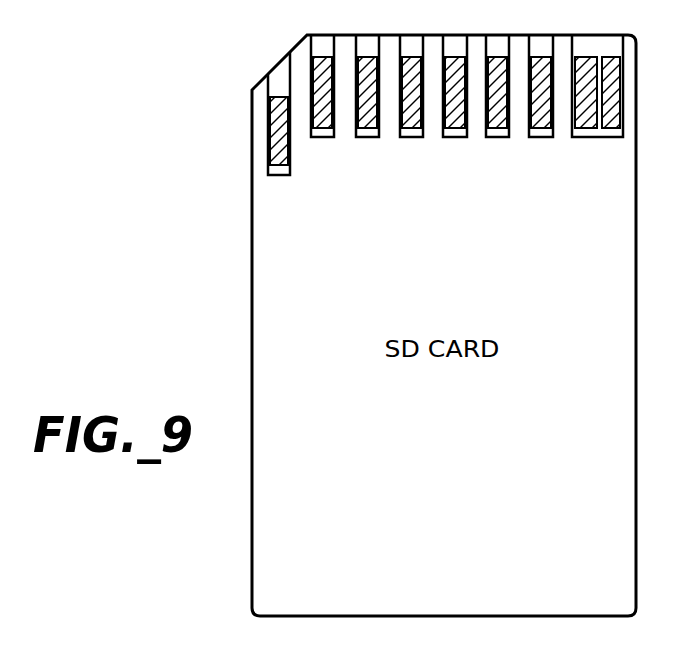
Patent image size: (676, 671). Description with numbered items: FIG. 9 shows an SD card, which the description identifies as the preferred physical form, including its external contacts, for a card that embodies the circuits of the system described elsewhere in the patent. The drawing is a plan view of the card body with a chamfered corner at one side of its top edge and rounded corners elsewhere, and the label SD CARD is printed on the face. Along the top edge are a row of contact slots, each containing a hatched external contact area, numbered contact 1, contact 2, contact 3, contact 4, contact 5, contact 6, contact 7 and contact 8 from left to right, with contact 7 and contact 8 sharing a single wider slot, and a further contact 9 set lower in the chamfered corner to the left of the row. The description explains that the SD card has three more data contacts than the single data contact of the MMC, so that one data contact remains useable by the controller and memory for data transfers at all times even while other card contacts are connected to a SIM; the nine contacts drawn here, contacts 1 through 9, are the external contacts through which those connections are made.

The SD card contact pin 1 (CD/DAT3) 1 is at (322, 71).
The SD card contact pin 2 (CMD) 2 is at (367, 71).
The SD card contact pin 3 (VSS1) 3 is at (411, 71).
The SD card contact pin 4 (VDD) 4 is at (455, 71).
The SD card contact pin 5 (CLK) 5 is at (497, 71).
The SD card contact pin 6 (VSS2) 6 is at (541, 71).
The SD card contact pin 7 (DAT0) 7 is at (597, 71).
The SD card contact pin 8 (DAT1) 8 is at (611, 67).
The SD card contact pin 9 (DAT2) 9 is at (279, 103).